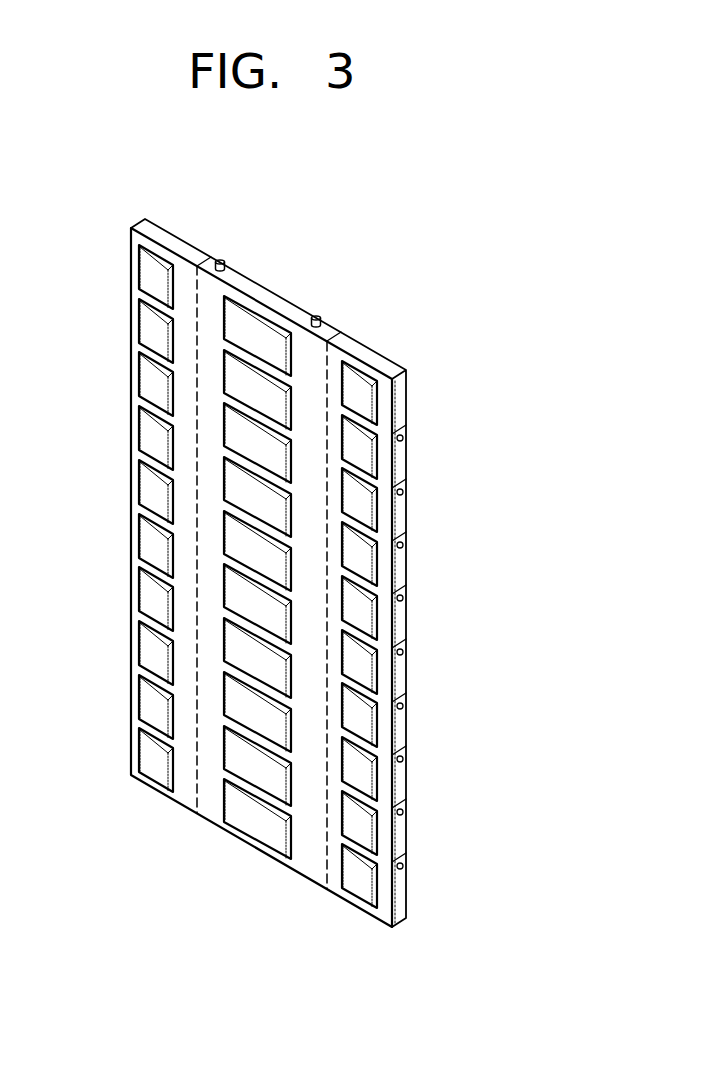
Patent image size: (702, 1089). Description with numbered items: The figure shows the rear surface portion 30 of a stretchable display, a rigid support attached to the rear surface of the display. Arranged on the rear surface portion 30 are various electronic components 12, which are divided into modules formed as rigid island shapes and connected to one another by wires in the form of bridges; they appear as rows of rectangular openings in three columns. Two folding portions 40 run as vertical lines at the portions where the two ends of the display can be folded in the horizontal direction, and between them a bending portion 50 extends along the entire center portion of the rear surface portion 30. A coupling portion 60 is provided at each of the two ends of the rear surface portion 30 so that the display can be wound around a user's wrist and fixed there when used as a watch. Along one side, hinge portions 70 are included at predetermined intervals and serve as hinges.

The rear surface portion 30 is at (446, 196).
The electronic components 12 is at (362, 672).
The folding portion 40 is at (197, 343).
The bending portion 50 is at (305, 727).
The coupling portion 60 is at (221, 260).
The hinge portion 70 is at (404, 523).